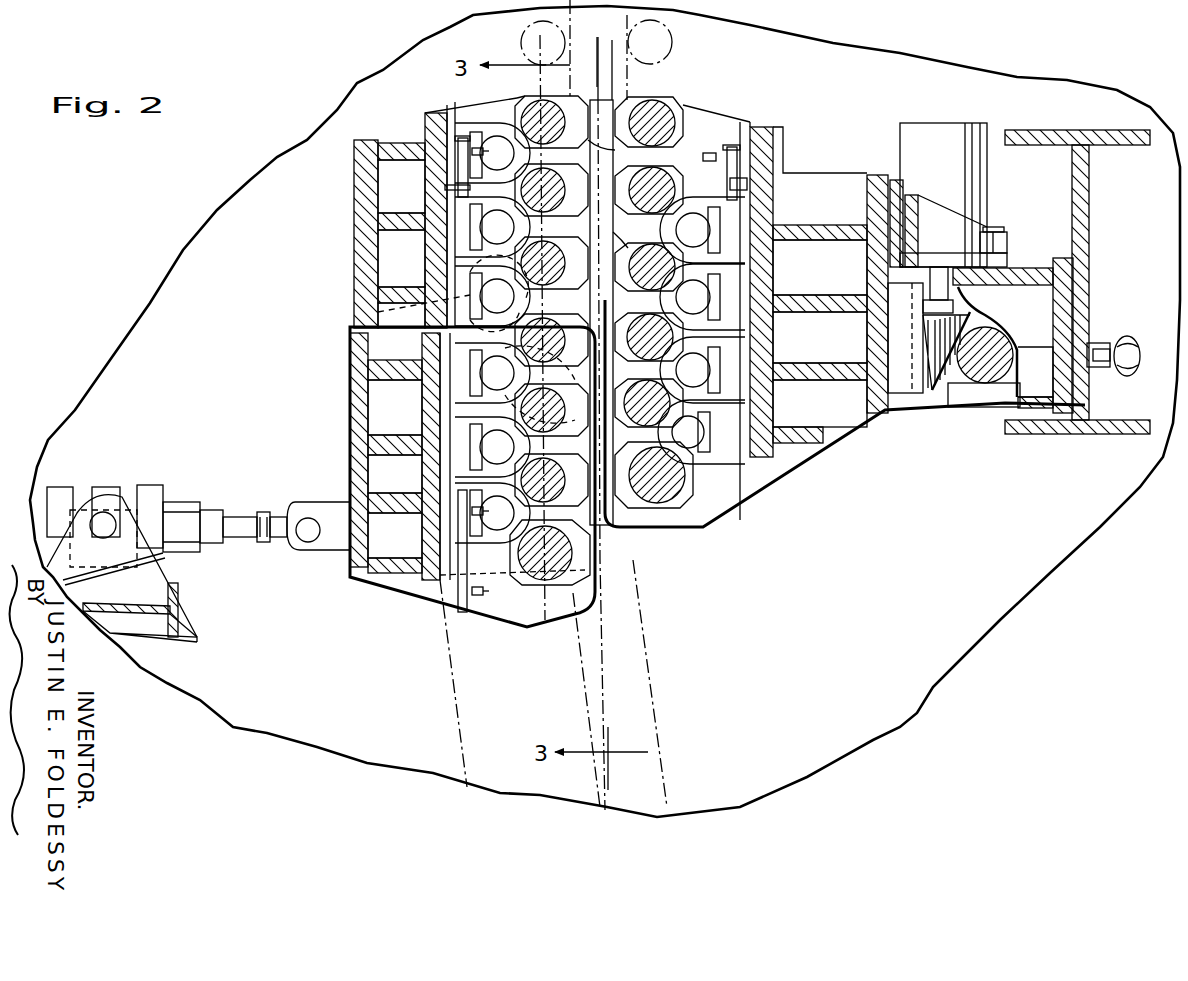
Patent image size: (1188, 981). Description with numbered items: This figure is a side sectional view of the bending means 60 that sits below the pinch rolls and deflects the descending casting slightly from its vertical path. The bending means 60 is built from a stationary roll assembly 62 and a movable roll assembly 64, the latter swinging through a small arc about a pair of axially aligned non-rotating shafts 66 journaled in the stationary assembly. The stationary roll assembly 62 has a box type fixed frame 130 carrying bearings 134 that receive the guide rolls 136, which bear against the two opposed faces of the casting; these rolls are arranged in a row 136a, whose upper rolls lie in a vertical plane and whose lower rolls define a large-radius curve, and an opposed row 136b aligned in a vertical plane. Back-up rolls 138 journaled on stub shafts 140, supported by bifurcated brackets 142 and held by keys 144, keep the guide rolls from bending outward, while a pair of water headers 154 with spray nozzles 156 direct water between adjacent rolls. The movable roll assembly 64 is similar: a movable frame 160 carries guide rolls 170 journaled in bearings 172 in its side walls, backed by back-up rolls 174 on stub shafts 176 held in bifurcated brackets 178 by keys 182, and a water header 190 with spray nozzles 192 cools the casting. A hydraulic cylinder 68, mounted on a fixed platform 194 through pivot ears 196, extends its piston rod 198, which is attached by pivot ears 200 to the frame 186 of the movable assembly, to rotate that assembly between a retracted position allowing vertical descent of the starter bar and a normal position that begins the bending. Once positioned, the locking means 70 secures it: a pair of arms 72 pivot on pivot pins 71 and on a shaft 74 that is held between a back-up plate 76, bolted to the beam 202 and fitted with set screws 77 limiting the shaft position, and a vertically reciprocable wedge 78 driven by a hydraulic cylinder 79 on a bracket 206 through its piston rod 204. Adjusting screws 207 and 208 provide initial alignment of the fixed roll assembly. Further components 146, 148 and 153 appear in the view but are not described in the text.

The bending means 60 is at (330, 330).
The stationary roll assembly 62 is at (350, 255).
The movable roll assembly 64 is at (350, 440).
The non-rotating shafts 66 is at (445, 272).
The hydraulic cylinder 68 is at (168, 487).
The locking means 70 is at (1100, 330).
The pivot pins 71 is at (352, 480).
The arms 72 is at (950, 410).
The shaft 74 is at (985, 383).
The back-up plate 76 is at (1055, 385).
The set screws 77 is at (1140, 322).
The wedge 78 is at (920, 342).
The hydraulic cylinder 79 is at (952, 152).
The box type fixed frame 130 is at (356, 288).
The bearings 134 is at (683, 128).
The guide rolls 136 is at (600, 68).
The row of guide rolls 136a is at (613, 232).
The opposed row of guide rolls 136b is at (588, 150).
The back-up rolls 138 is at (690, 215).
The stub shafts 140 is at (820, 276).
The bifurcated brackets 142 is at (773, 228).
The keys 144 is at (820, 377).
The side wall 146 is at (870, 198).
The frame wall 148 is at (773, 160).
The bolt 153 is at (495, 135).
The water headers 154 is at (428, 135).
The spray nozzles 156 is at (452, 150).
The movable frame 160 is at (355, 405).
The guide rolls 170 is at (580, 378).
The bearings 172 is at (592, 598).
The back-up rolls 174 is at (550, 552).
The stub shafts 176 is at (490, 525).
The bifurcated brackets 178 is at (545, 325).
The keys 182 is at (470, 350).
The frame 186 is at (355, 362).
The water header 190 is at (458, 600).
The spray nozzles 192 is at (470, 520).
The fixed platform 194 is at (178, 640).
The pivot ears 196 is at (173, 570).
The piston rod 198 is at (240, 522).
The pivot ears 200 is at (332, 552).
The beam 202 is at (1073, 292).
The piston rod 204 is at (930, 280).
The bracket 206 is at (930, 253).
The adjusting screw 207 is at (1002, 318).
The adjusting screw 208 is at (1005, 235).